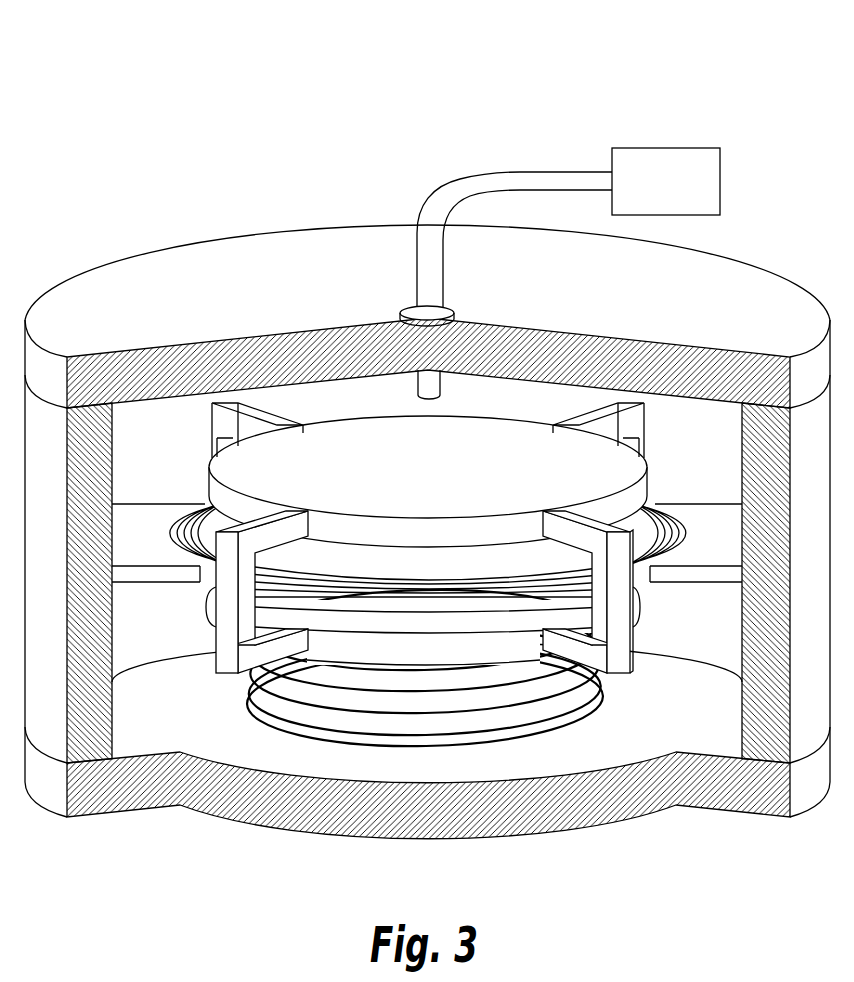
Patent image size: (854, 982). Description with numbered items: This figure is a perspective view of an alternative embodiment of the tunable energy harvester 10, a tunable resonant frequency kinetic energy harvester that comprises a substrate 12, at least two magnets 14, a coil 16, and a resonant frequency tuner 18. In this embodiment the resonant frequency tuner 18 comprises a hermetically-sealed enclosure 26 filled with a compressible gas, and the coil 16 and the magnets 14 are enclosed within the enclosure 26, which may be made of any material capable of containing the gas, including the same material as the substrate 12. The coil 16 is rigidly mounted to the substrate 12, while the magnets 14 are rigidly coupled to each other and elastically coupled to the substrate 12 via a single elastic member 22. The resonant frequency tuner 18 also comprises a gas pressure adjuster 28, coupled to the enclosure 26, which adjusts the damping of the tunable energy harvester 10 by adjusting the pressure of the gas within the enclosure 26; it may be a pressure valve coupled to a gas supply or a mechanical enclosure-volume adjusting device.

The tunable energy harvester 10 is at (98, 73).
The substrate 12 is at (167, 575).
The magnets 14 is at (640, 493).
The coil 16 is at (200, 510).
The resonant frequency tuner 18 is at (506, 285).
The elastic member 22 is at (603, 700).
The enclosure 26 is at (341, 240).
The gas pressure adjuster 28 is at (668, 163).